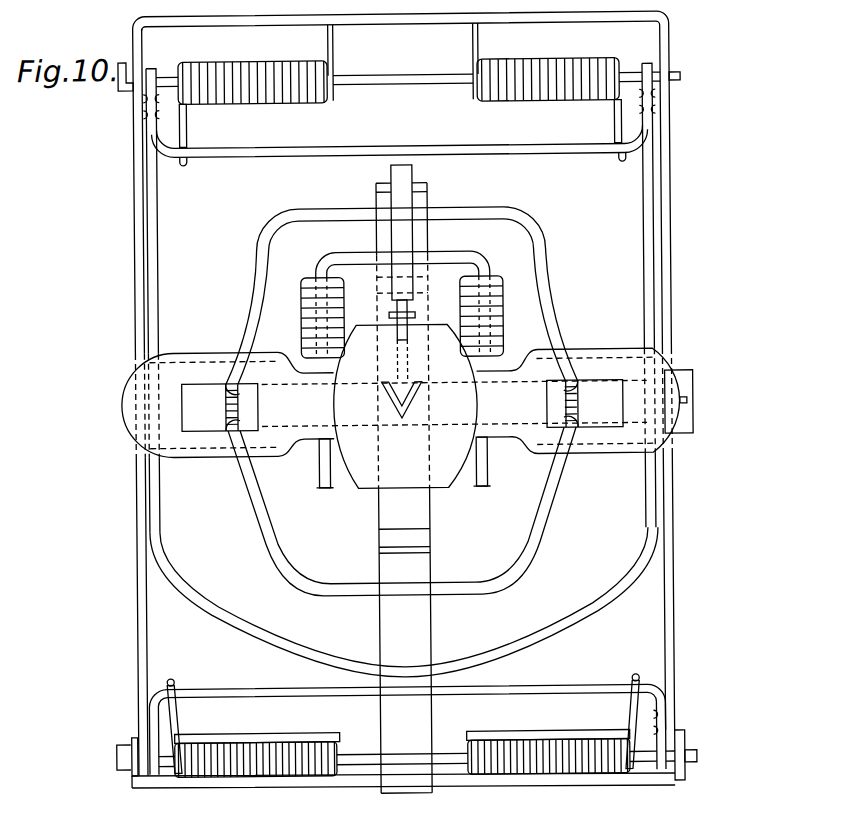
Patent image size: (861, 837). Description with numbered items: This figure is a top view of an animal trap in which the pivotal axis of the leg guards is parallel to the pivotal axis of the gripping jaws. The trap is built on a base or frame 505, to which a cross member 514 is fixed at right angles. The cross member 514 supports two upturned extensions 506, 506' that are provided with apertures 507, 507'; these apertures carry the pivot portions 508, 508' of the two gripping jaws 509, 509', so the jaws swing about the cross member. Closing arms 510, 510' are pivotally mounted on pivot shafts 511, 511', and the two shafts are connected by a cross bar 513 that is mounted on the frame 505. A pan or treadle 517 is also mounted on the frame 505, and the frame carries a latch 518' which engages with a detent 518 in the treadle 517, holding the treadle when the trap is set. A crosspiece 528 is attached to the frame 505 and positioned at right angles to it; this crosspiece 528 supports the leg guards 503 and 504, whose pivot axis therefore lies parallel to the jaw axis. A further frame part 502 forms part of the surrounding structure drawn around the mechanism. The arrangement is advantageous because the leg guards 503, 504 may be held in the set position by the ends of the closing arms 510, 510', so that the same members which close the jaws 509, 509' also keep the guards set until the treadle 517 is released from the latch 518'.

The frame 502 is at (673, 224).
The leg guard 503 is at (142, 594).
The leg guard 504 is at (153, 528).
The base or frame 505 is at (426, 633).
The upturned extension 506 is at (266, 407).
The upturned extension 506' is at (541, 404).
The aperture 507 is at (220, 408).
The aperture 507' is at (585, 404).
The pivot portion 508 is at (405, 358).
The pivot portion 508' is at (404, 450).
The gripping jaw 509 is at (401, 309).
The gripping jaw 509' is at (402, 512).
The closing arm 510 is at (400, 418).
The closing arm 510' is at (682, 414).
The pivot shaft 511 is at (317, 479).
The pivot shaft 511' is at (497, 479).
The cross bar 513 is at (453, 260).
The cross member 514 is at (375, 423).
The pan or treadle 517 is at (440, 473).
The detent 518 is at (427, 338).
The latch 518' is at (437, 232).
The crosspiece 528 is at (355, 772).